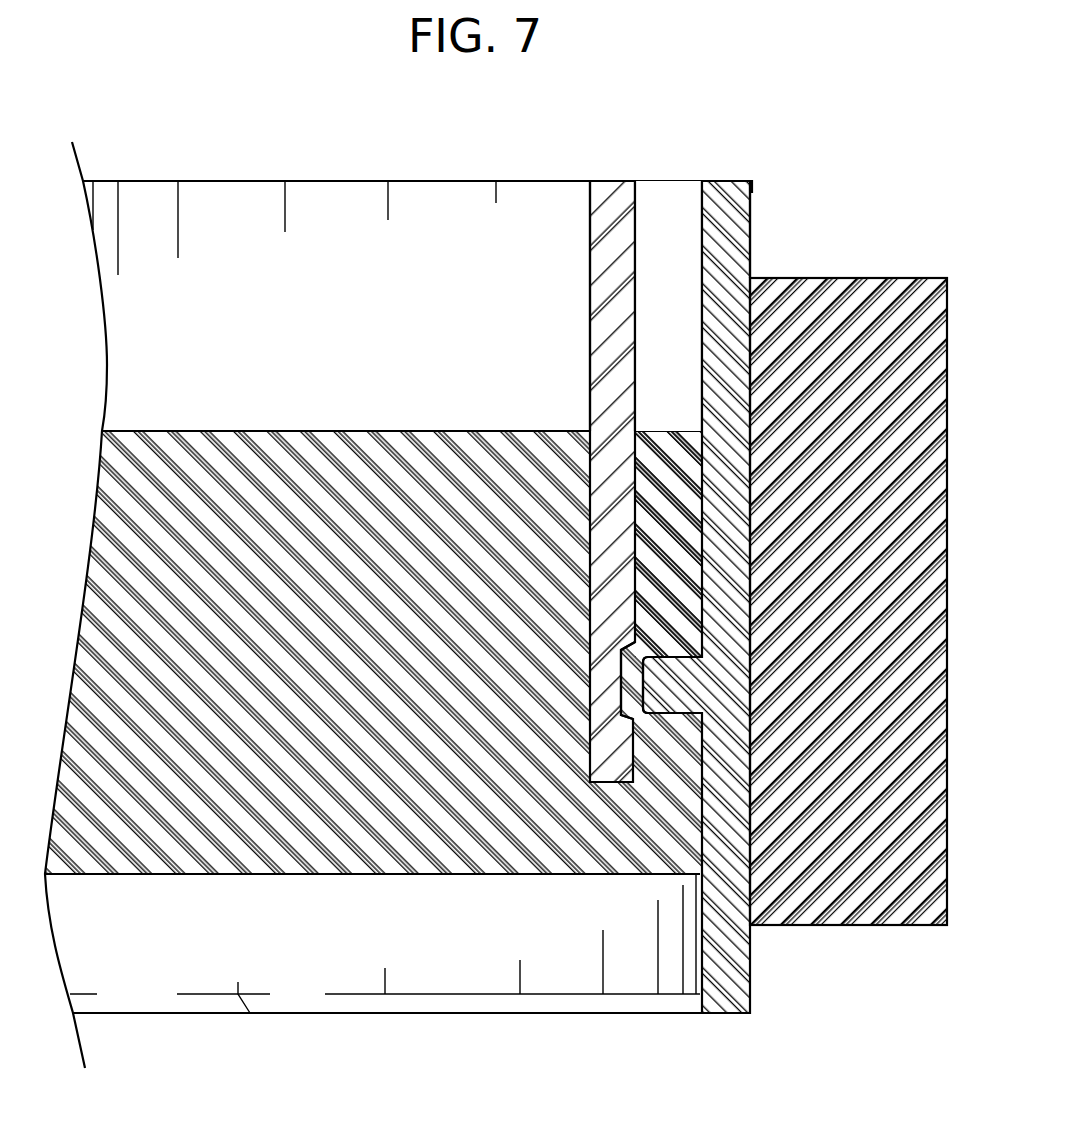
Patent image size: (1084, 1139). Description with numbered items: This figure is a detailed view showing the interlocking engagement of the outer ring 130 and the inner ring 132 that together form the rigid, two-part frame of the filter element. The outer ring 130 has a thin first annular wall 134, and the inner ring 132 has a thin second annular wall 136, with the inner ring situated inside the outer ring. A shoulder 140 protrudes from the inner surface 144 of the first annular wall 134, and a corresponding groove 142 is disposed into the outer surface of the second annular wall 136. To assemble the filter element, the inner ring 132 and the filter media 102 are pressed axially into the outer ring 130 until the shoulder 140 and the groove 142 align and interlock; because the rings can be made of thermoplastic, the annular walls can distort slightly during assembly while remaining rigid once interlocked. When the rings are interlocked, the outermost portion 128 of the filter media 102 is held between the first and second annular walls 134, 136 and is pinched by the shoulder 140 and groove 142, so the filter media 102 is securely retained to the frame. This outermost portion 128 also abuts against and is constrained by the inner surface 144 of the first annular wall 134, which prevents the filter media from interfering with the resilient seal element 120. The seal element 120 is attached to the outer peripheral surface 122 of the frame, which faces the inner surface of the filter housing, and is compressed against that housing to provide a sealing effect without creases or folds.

The filter media 102 is at (333, 843).
The resilient seal element 120 is at (892, 327).
The outer peripheral surface 122 is at (752, 208).
The outermost portion 128 is at (668, 506).
The outer ring 130 is at (727, 283).
The inner ring 132 is at (613, 265).
The first annular wall 134 is at (752, 184).
The second annular wall 136 is at (605, 222).
The shoulder 140 is at (688, 705).
The groove 142 is at (628, 705).
The inner surface 144 is at (703, 266).